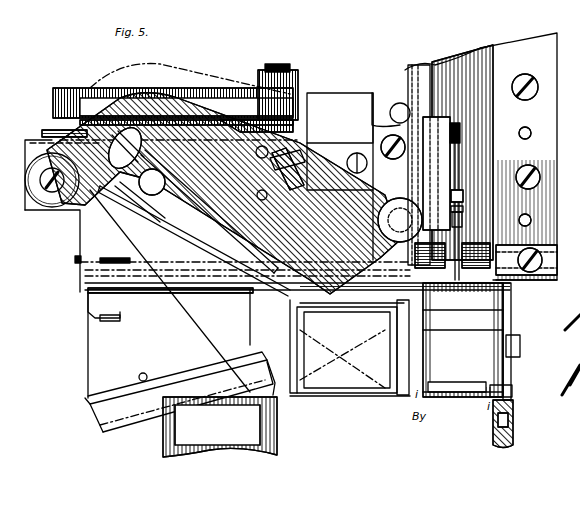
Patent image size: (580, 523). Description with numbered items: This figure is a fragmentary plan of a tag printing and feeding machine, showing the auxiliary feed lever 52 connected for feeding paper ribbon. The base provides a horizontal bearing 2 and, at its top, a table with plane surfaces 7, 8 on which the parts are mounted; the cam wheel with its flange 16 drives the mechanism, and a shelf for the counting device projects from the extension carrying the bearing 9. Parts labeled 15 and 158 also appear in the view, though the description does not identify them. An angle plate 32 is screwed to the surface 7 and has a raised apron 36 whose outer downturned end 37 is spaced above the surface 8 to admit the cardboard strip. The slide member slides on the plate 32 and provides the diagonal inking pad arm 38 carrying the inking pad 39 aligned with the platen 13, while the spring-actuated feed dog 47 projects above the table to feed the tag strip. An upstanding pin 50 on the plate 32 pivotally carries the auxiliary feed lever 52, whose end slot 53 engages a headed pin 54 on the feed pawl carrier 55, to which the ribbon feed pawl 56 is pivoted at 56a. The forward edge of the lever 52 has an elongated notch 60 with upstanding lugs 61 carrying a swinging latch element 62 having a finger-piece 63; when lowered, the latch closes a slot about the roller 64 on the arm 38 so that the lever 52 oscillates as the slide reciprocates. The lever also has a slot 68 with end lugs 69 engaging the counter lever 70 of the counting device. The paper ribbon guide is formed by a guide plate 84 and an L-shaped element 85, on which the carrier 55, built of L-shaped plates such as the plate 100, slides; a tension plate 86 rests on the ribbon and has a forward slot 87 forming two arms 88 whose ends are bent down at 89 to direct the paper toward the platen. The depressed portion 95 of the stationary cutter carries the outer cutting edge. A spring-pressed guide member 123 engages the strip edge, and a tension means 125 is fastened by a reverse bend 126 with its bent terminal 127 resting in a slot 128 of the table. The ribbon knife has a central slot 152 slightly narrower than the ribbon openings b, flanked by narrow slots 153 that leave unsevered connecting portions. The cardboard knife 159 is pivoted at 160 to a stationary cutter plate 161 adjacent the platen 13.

The horizontal bearing 2 is at (280, 418).
The plane surface 7 is at (340, 176).
The plane surface 8 is at (176, 297).
The bearing 9 is at (553, 264).
The platen 13 is at (510, 335).
The top bar 15 is at (58, 128).
The flange 16 is at (225, 108).
The angle plate 32 is at (73, 208).
The apron portion 36 is at (84, 270).
The downturned end 37 is at (154, 294).
The inking pad arm 38 is at (336, 404).
The inking pad 39 is at (524, 308).
The feed dog 47 is at (360, 290).
The upstanding pin 50 is at (42, 182).
The auxiliary feed lever 52 is at (160, 74).
The slot 53 is at (390, 113).
The headed pin 54 is at (412, 110).
The feed pawl carrier 55 is at (443, 166).
The pawl 56 is at (461, 185).
The pawl pivot 56a is at (462, 132).
The elongated notch 60 is at (200, 206).
The upstanding lugs 61 is at (140, 152).
The latch element 62 is at (194, 232).
The finger-piece 63 is at (155, 203).
The roller 64 is at (165, 186).
The slot 68 is at (303, 154).
The upstanding end lugs 69 is at (316, 132).
The counter lever 70 is at (264, 206).
The guide plate 84 is at (550, 68).
The L-shaped element 85 is at (432, 66).
The tension plate 86 is at (478, 62).
The slot 87 is at (463, 230).
The arms 88 is at (467, 201).
The bent ends 89 is at (452, 255).
The depressed portion 95 is at (490, 283).
The L-shaped plate 100 is at (490, 186).
The guide member 123 is at (180, 376).
The tension means 125 is at (188, 274).
The reverse bend 126 is at (90, 300).
The bent terminal 127 is at (101, 320).
The slot 128 is at (121, 318).
The central slot 152 is at (396, 300).
The narrow slots 153 is at (530, 282).
The part 158 is at (490, 250).
The knife 159 is at (514, 392).
The pivot 160 is at (516, 420).
The stationary cutter plate 161 is at (522, 348).
The opening b is at (505, 295).